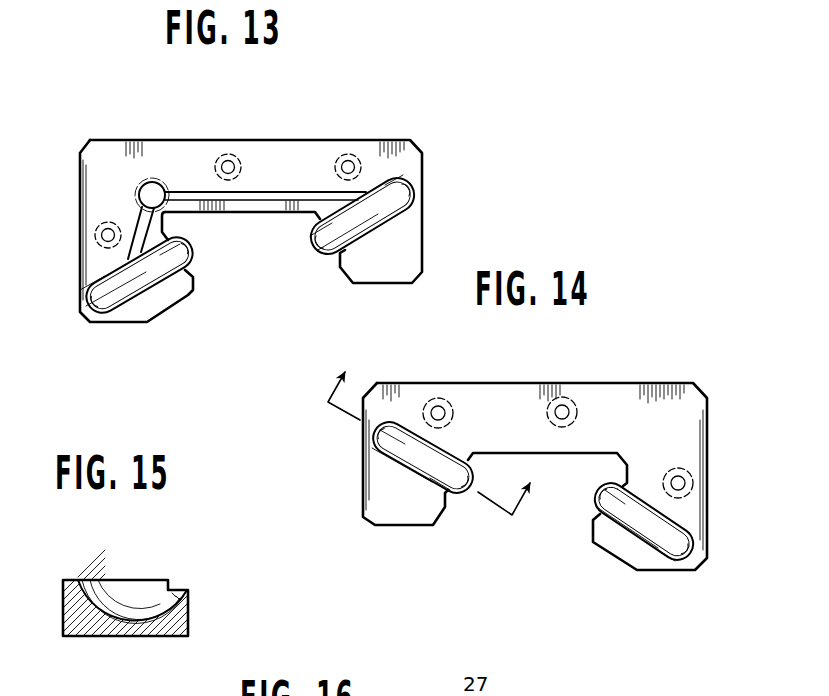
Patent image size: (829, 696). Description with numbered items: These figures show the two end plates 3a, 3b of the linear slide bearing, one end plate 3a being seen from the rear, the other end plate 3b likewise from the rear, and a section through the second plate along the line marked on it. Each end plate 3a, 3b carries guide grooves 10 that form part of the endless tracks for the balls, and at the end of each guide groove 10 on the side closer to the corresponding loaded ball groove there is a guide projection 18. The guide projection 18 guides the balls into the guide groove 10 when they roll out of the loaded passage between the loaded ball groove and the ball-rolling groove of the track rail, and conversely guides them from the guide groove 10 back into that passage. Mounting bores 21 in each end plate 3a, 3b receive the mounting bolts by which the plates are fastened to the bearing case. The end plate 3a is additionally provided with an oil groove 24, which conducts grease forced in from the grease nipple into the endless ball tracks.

In FIG. 13, the end plate 3a is at (400, 130).
In FIG. 14, the end plate 3b is at (678, 375).
In FIG. 13, the guide groove 10 is at (150, 283).
In FIG. 14, the guide groove 10 is at (402, 463).
In FIG. 15, the guide groove 10 is at (122, 620).
In FIG. 13, the guide projection 18 is at (190, 252).
In FIG. 14, the guide projection 18 is at (465, 492).
In FIG. 15, the guide projection 18 is at (179, 601).
In FIG. 13, the mounting bore 21 is at (228, 160).
In FIG. 14, the mounting bore 21 is at (438, 405).
In FIG. 13, the oil groove 24 is at (277, 194).